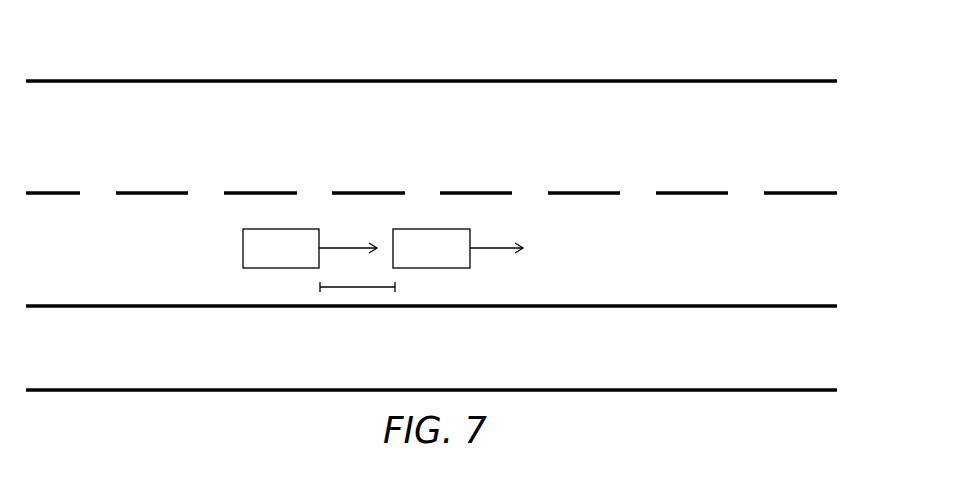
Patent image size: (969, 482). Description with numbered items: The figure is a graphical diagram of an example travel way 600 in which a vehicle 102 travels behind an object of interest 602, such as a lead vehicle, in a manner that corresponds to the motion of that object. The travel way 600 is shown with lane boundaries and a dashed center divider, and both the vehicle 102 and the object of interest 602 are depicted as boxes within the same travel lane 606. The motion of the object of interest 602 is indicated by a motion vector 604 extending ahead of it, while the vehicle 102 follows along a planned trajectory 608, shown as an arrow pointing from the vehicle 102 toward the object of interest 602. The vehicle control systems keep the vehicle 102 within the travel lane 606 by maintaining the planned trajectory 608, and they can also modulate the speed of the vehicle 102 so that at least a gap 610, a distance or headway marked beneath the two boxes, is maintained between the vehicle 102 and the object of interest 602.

The travel way 600 is at (243, 53).
The vehicle 102 is at (281, 248).
The object of interest 602 is at (431, 248).
The motion vector 604 is at (506, 248).
The travel lane 606 is at (806, 258).
The planned trajectory 608 is at (349, 248).
The gap 610 is at (366, 289).